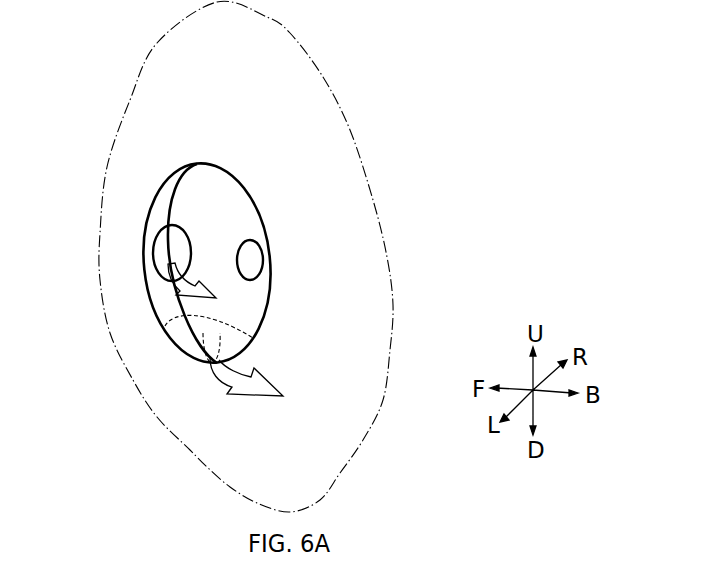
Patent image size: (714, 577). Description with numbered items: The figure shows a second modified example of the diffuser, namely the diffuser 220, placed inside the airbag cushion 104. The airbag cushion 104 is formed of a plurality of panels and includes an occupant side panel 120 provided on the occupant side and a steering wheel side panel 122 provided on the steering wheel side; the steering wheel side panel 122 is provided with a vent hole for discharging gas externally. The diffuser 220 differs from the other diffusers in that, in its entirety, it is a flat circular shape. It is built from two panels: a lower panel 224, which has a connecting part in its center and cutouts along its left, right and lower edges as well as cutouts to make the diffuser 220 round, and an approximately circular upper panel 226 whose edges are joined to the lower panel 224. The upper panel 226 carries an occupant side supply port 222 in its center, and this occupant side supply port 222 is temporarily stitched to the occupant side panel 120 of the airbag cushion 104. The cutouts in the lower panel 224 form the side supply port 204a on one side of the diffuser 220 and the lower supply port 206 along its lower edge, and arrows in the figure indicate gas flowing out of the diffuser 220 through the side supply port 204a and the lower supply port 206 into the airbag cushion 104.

The airbag cushion 104 is at (290, 33).
The occupant side panel 120 is at (349, 130).
The steering wheel side panel 122 is at (100, 212).
The diffuser 220 is at (218, 164).
The lower panel 224 is at (147, 302).
The upper panel 226 is at (260, 220).
The side supply port 204a is at (185, 235).
The occupant side supply port 222 is at (253, 270).
The lower supply port 206 is at (187, 345).